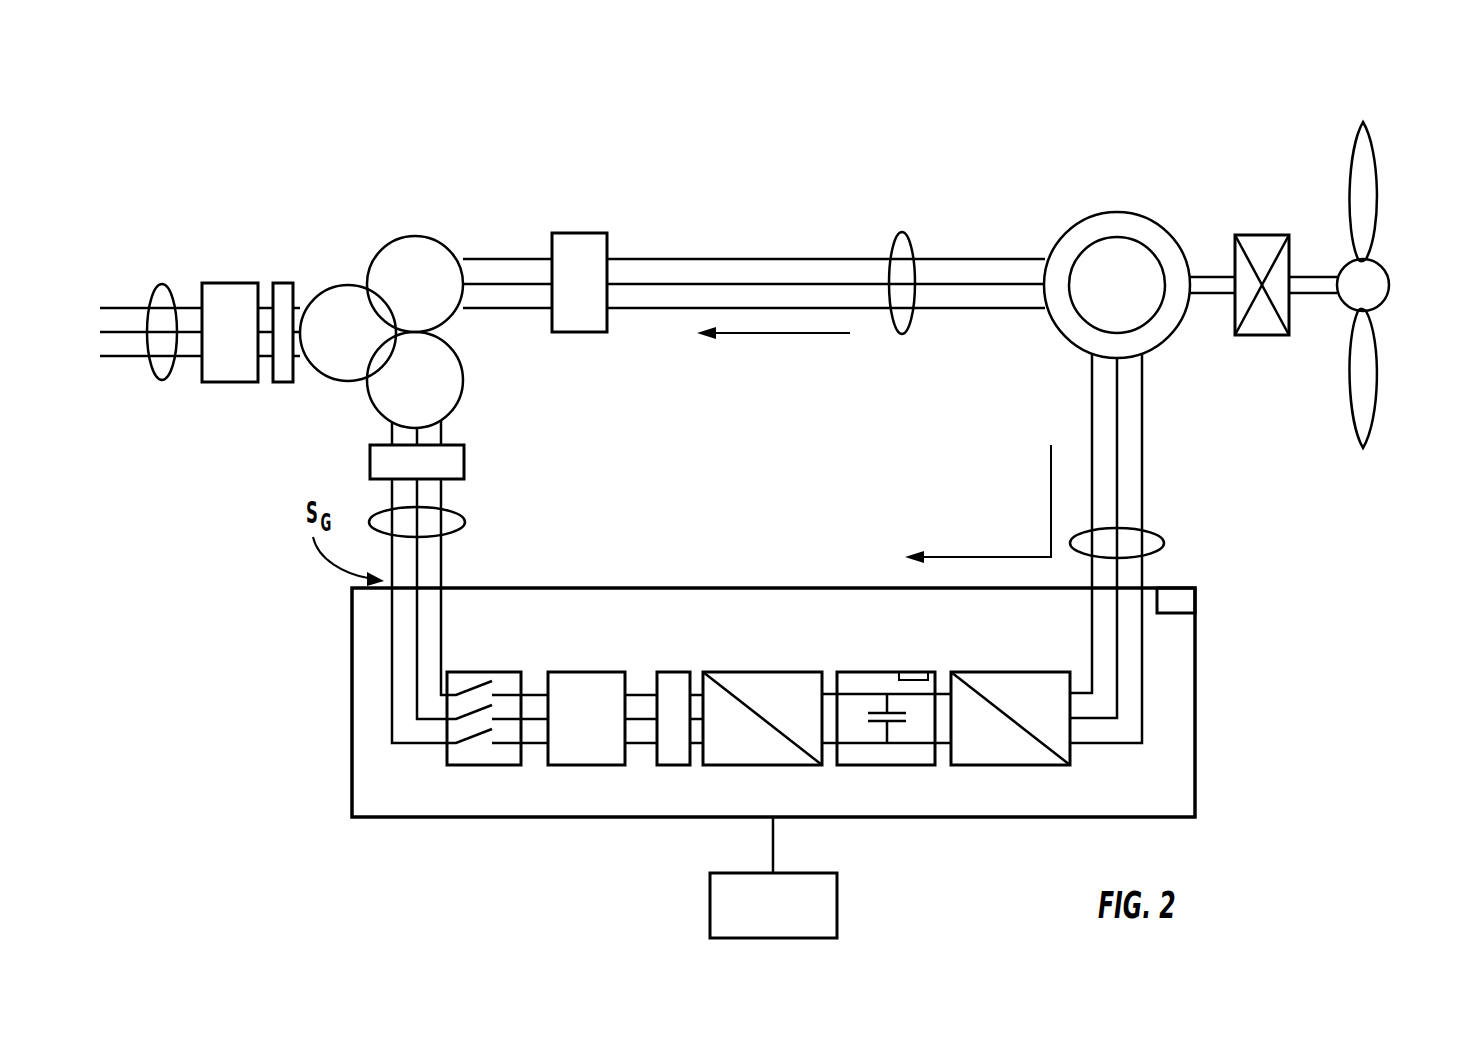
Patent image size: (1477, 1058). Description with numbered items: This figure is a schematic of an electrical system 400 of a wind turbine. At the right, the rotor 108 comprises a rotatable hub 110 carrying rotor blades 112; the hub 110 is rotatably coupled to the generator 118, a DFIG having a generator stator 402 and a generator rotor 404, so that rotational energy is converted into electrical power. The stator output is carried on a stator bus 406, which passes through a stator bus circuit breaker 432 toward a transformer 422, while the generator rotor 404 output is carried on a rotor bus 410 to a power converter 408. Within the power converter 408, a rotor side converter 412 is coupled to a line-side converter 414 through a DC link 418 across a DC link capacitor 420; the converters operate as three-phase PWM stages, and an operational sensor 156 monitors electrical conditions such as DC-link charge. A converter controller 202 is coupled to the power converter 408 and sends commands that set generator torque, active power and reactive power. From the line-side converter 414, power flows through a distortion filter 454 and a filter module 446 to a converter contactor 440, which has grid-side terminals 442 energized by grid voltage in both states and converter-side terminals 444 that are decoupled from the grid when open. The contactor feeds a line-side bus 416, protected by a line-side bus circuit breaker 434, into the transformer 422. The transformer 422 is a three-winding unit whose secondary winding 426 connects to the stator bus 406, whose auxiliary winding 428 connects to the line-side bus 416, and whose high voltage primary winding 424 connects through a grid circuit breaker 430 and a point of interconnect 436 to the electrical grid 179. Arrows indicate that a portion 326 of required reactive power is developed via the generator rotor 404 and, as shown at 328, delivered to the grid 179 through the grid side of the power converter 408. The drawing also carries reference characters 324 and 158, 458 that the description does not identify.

The electrical system 400 is at (745, 108).
The rotor 108 is at (1430, 142).
The hub 110 is at (1392, 290).
The rotor blade 112 is at (1378, 220).
The generator 118 is at (1128, 212).
The generator stator 402 is at (1176, 240).
The generator rotor 404 is at (1157, 316).
The stator bus 406 is at (902, 231).
The rotor bus 410 is at (1164, 543).
The stator power flow 324 is at (762, 334).
The portion of the required reactive power generation 326 is at (978, 504).
The delivery of the reactive power portion 328 is at (973, 556).
The power converter 408 is at (1195, 683).
The rotor side converter 412 is at (1002, 765).
The line-side converter 414 is at (767, 765).
The DC link 418 is at (885, 710).
The DC link capacitor 420 is at (893, 722).
The operational sensor 156 is at (1182, 603).
The converter contactor 440 is at (495, 739).
The grid-side terminal 442 is at (455, 692).
The converter-side terminal 444 is at (503, 692).
The filter module 446 is at (590, 678).
The distortion filter 454 is at (672, 678).
The line-side bus circuit breaker 434 is at (464, 458).
The line-side bus 416 is at (465, 522).
The transformer 422 is at (350, 197).
The primary winding 424 is at (328, 286).
The secondary winding 426 is at (415, 236).
The auxiliary winding 428 is at (462, 369).
The stator bus circuit breaker 432 is at (570, 233).
The grid circuit breaker 430 is at (232, 283).
The grid disconnect switch 158 is at (275, 376).
The grid disconnect switch 458 is at (285, 382).
The electrical grid 179 is at (158, 282).
The point of interconnect 436 is at (185, 372).
The converter controller 202 is at (837, 908).